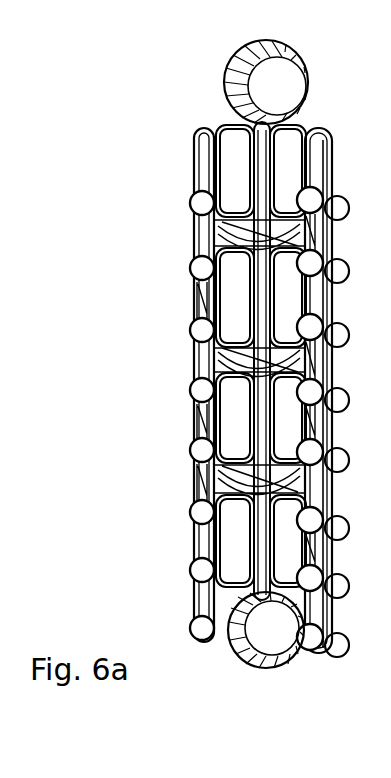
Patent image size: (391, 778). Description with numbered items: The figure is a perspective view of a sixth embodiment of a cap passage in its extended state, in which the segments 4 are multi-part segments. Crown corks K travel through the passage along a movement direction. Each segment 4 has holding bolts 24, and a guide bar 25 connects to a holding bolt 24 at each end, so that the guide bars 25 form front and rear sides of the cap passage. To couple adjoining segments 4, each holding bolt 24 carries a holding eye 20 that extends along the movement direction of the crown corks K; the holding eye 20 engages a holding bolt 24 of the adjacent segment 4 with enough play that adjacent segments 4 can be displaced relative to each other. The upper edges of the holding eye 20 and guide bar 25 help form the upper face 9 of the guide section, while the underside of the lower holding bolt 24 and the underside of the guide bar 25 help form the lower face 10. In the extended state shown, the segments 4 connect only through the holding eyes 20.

The crown cork K is at (263, 92).
The segment 4 is at (207, 395).
The holding bolt 24 is at (197, 208).
The holding eye 20 is at (192, 228).
The guide bar 25 is at (192, 250).
The upper face 9 is at (193, 370).
The lower face 10 is at (190, 488).